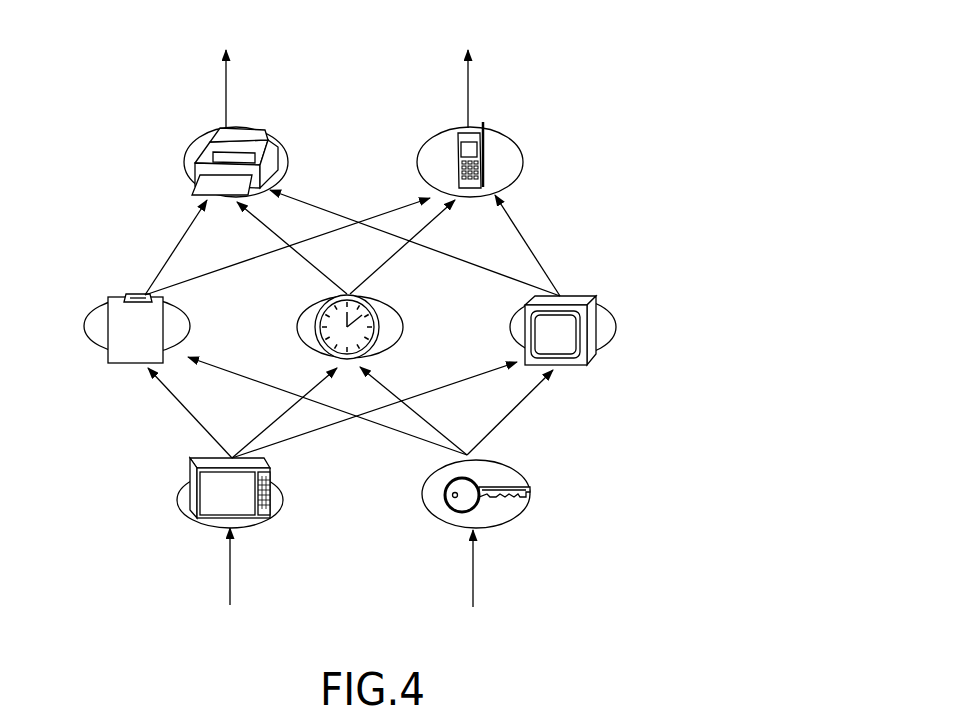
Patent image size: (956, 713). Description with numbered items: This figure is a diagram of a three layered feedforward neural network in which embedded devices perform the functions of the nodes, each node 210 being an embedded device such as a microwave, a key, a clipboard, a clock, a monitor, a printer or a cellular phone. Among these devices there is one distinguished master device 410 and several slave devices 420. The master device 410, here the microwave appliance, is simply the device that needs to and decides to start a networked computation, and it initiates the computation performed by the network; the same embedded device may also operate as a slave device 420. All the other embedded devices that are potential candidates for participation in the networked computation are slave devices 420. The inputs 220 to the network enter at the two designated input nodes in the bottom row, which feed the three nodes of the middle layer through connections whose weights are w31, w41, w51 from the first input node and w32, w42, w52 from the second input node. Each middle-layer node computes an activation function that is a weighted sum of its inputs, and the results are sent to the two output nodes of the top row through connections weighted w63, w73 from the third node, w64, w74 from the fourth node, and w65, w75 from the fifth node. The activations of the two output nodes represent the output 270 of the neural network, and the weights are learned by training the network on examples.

The node 210 is at (277, 147).
The slave device 420 is at (318, 314).
The master device 410 is at (160, 488).
The output 270 is at (377, 67).
The inputs 220 is at (370, 588).
The weight w31 is at (184, 413).
The weight w41 is at (280, 413).
The weight w51 is at (374, 408).
The weight w32 is at (327, 406).
The weight w42 is at (420, 411).
The weight w52 is at (515, 412).
The weight w63 is at (159, 247).
The weight w73 is at (287, 240).
The weight w64 is at (283, 248).
The weight w74 is at (397, 247).
The weight w65 is at (415, 243).
The weight w75 is at (534, 245).